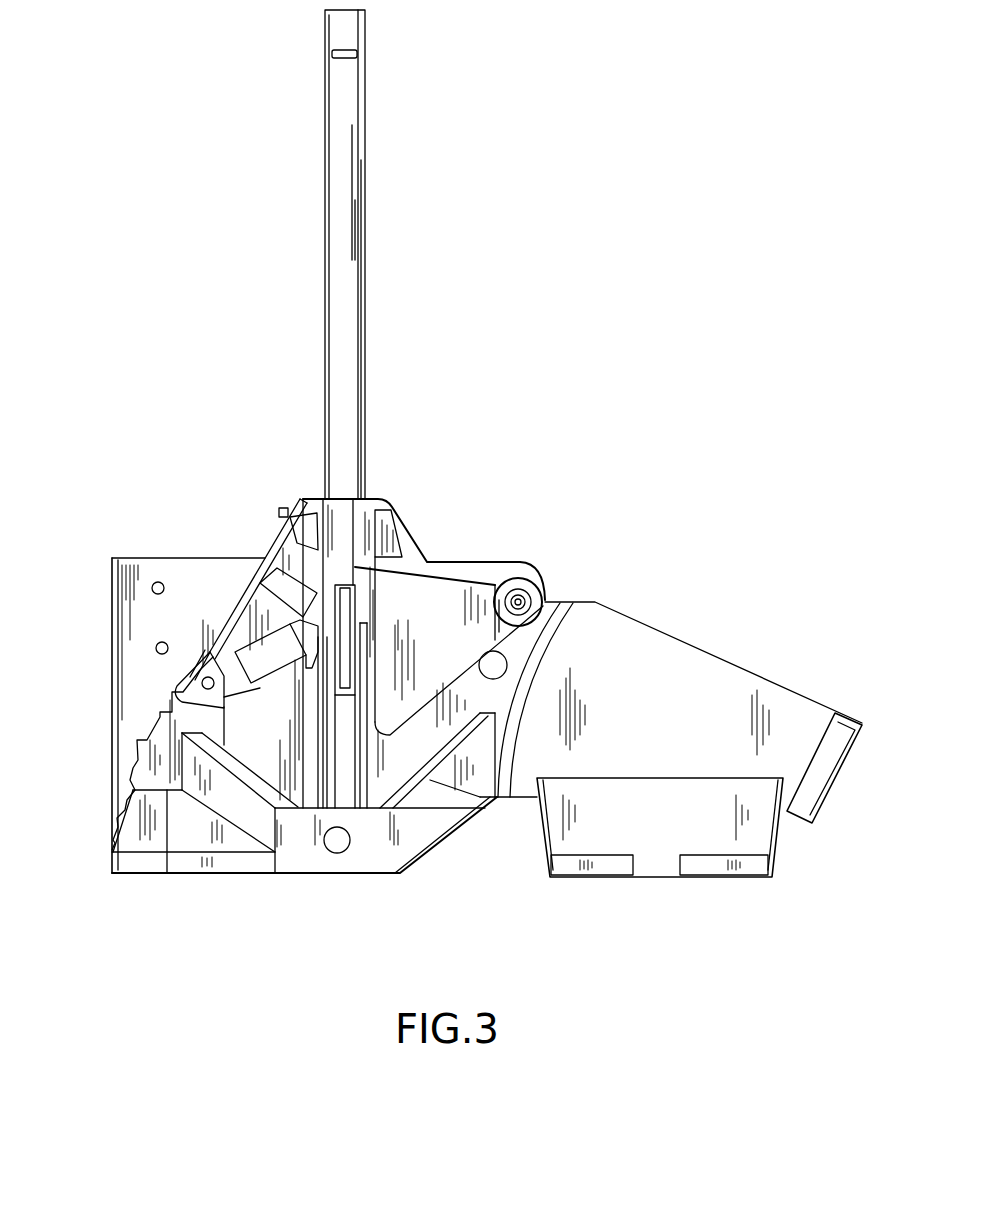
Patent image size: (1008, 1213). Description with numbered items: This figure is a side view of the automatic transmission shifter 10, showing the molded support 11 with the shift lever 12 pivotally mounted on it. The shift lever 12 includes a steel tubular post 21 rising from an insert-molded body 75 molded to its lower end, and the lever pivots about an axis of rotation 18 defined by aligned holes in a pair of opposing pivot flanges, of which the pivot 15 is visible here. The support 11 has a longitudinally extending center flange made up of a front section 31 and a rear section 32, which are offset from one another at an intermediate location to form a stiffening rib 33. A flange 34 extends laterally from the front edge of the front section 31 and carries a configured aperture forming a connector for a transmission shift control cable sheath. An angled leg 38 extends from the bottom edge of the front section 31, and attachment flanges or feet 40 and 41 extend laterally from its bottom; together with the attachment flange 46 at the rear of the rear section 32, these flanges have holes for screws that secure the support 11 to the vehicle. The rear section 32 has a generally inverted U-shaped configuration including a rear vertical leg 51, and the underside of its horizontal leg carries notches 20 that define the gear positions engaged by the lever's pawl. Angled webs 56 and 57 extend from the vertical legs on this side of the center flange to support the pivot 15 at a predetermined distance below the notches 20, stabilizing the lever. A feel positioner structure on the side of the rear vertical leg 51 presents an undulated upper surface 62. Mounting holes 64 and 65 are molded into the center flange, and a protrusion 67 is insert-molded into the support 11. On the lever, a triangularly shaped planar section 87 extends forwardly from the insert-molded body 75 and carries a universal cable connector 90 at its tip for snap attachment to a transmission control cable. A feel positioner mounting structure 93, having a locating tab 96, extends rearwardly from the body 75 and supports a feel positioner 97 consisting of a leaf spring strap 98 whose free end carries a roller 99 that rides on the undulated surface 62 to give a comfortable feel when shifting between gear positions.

The automatic transmission shifter 10 is at (597, 233).
The molded support 11 is at (577, 493).
The shift lever 12 is at (462, 85).
The pivot 15 is at (358, 875).
The axis of rotation 18 is at (338, 852).
The notches 20 is at (268, 648).
The post 21 is at (367, 218).
The front section 31 is at (735, 665).
The rear section 32 is at (145, 556).
The stiffening rib 33 is at (557, 663).
The flange 34 is at (846, 765).
The angled leg 38 is at (675, 836).
The attachment flange 40 is at (598, 880).
The attachment flange 41 is at (716, 880).
The attachment flange 46 is at (140, 878).
The rear vertical leg 51 is at (108, 695).
The angled web 56 is at (248, 813).
The angled web 57 is at (452, 863).
The undulated upper surface 62 is at (150, 737).
The hole 64 is at (156, 648).
The hole 65 is at (152, 588).
The protrusion 67 is at (506, 653).
The insert-molded body 75 is at (397, 487).
The triangularly-shaped planar section 87 is at (470, 568).
The universal cable connector 90 is at (528, 593).
The feel positioner mounting structure 93 is at (283, 582).
The locating tab 96 is at (283, 508).
The feel positioner 97 is at (236, 594).
The leaf spring strap 98 is at (212, 647).
The roller 99 is at (216, 690).